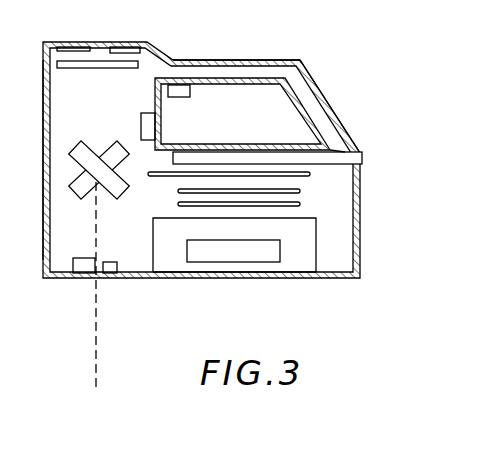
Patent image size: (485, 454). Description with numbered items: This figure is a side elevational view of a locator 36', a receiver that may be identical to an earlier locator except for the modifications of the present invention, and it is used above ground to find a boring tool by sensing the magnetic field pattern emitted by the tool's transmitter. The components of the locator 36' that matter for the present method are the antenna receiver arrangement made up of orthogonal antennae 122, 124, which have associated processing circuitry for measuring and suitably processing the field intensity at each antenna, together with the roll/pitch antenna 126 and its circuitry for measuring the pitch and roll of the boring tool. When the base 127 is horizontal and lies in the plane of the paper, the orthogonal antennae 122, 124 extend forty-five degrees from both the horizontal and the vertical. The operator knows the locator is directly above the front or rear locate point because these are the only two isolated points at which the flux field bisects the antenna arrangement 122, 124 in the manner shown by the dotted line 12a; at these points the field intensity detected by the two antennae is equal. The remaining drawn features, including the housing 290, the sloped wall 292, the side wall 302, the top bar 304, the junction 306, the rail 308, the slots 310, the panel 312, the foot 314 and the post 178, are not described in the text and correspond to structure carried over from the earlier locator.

The housing 290 is at (358, 258).
The locator 36' is at (235, 78).
The sloped wall 292 is at (310, 76).
The side wall 302 is at (44, 96).
The top bar 304 is at (82, 61).
The junction 306 is at (342, 158).
The rail 308 is at (362, 158).
The slots 310 is at (312, 186).
The panel 312 is at (318, 265).
The roll/pitch antenna 126 is at (226, 262).
The base 127 is at (303, 278).
The orthogonal antenna 122 is at (72, 150).
The orthogonal antenna 124 is at (72, 196).
The foot 314 is at (83, 276).
The post 178 is at (110, 276).
The dotted line 12a is at (98, 348).